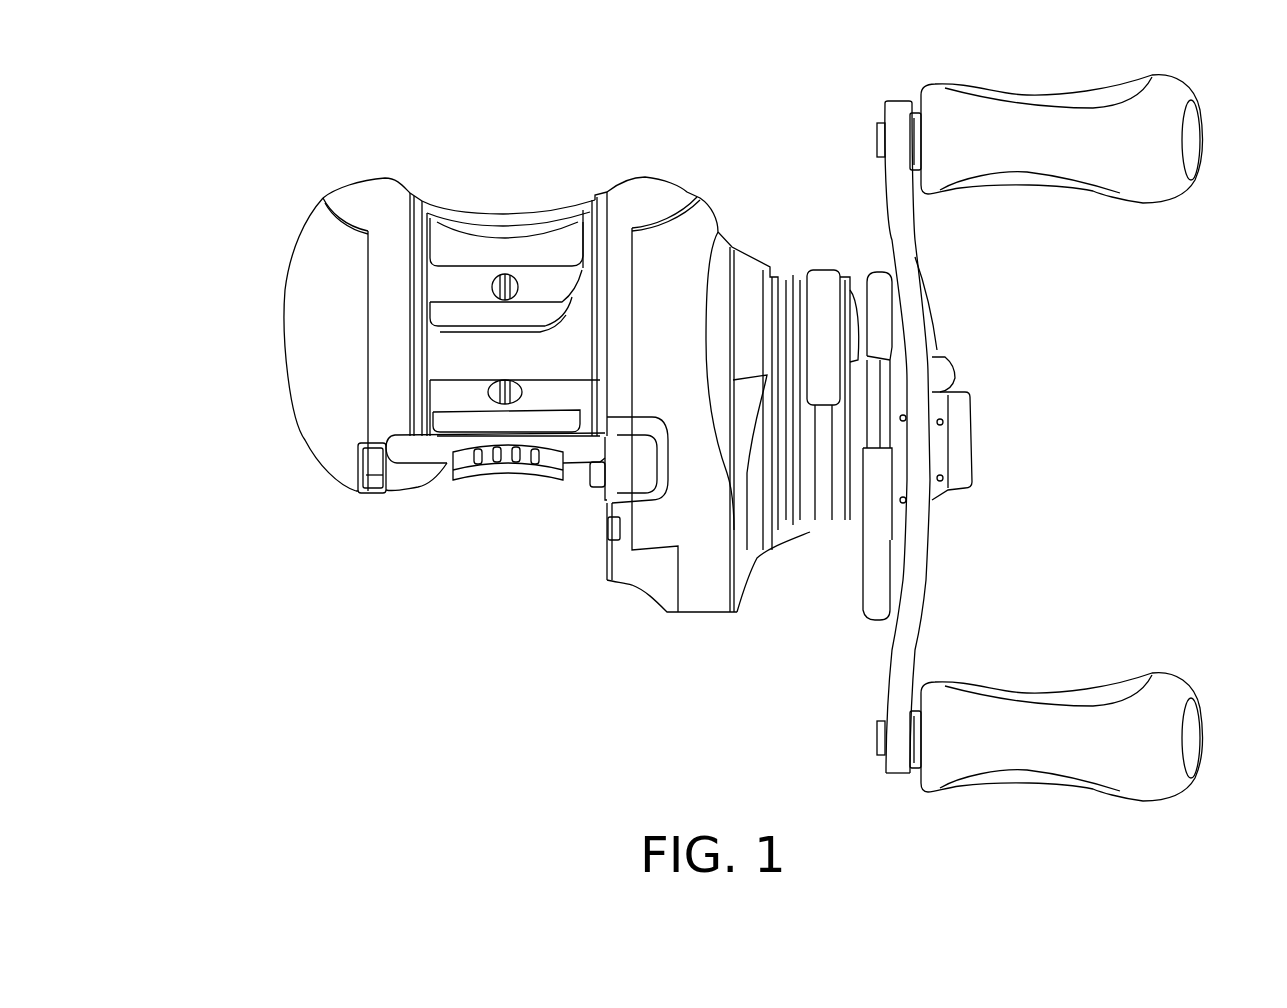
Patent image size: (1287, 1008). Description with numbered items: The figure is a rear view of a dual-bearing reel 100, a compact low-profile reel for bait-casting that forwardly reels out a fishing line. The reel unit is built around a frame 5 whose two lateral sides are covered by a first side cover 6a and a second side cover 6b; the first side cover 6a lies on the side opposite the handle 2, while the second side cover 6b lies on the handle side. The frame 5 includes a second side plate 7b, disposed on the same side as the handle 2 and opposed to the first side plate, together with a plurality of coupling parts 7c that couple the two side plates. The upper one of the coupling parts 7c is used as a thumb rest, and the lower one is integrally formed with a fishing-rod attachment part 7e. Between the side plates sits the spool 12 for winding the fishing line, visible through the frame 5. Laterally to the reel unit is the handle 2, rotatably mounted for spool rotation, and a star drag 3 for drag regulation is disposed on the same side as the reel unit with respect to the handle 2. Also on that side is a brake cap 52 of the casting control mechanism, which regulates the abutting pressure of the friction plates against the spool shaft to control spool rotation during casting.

The dual-bearing reel 100 is at (1036, 397).
The handle 2 is at (922, 236).
The star drag 3 is at (872, 272).
The frame 5 is at (378, 177).
The first side cover 6a is at (285, 293).
The second side cover 6b is at (737, 590).
The second side plate 7b is at (598, 487).
The coupling parts 7c is at (437, 447).
The fishing-rod attachment part 7e is at (502, 480).
The spool 12 is at (440, 388).
The brake cap 52 is at (824, 272).